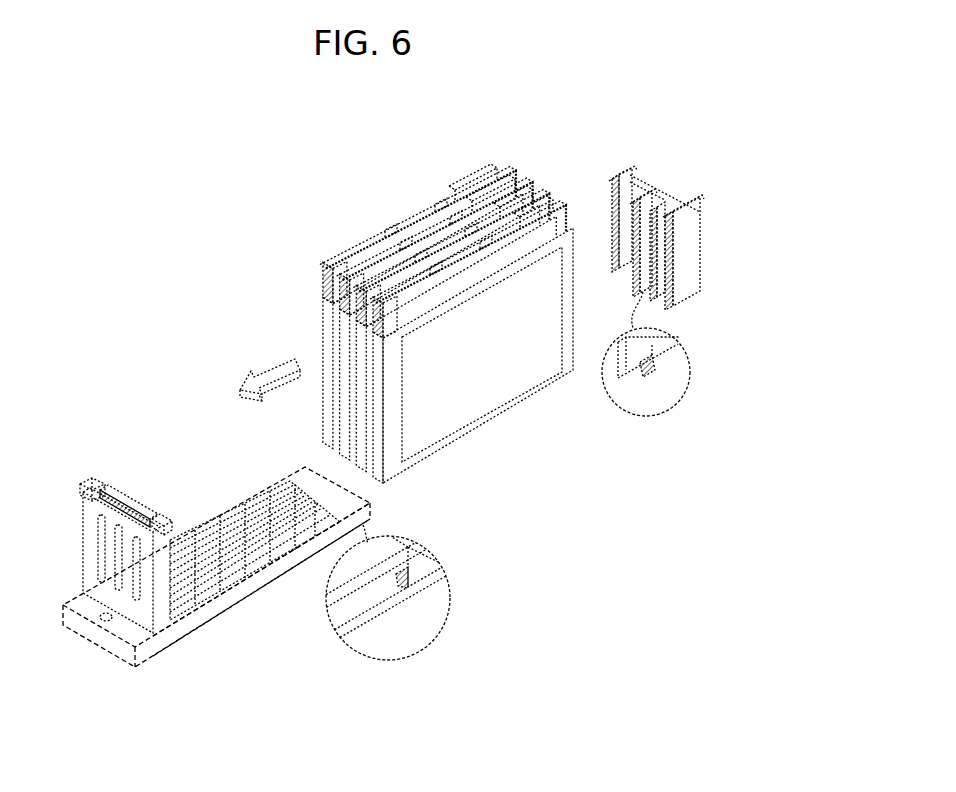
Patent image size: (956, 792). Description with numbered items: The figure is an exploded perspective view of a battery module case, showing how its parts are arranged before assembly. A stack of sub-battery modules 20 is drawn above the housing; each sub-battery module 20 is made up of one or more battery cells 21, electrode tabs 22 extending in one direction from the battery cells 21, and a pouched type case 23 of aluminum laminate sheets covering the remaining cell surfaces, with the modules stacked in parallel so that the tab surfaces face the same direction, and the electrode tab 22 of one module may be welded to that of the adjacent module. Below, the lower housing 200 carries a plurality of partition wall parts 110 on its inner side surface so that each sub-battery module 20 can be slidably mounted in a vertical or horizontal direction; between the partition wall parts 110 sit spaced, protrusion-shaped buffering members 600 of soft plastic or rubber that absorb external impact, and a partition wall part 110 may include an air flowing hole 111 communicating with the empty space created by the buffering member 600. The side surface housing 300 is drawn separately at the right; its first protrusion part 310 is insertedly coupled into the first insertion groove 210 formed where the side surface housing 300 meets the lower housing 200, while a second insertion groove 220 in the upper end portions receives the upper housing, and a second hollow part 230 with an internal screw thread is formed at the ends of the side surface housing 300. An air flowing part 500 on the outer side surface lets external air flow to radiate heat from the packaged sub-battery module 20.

The sub-battery module 20 is at (253, 280).
The battery cell 21 is at (322, 277).
The electrode tab 22 is at (353, 247).
The pouched type case 23 is at (320, 318).
The partition wall part 110 is at (273, 575).
The air flowing hole 111 is at (240, 588).
The lower housing 200 is at (173, 633).
The first insertion groove 210 is at (420, 557).
The second insertion groove 220 is at (95, 505).
The second hollow part 230 is at (112, 496).
The side surface housing 300 is at (623, 167).
The first protrusion part 310 is at (630, 393).
The air flowing part 500 is at (100, 547).
The buffering member 600 is at (230, 517).